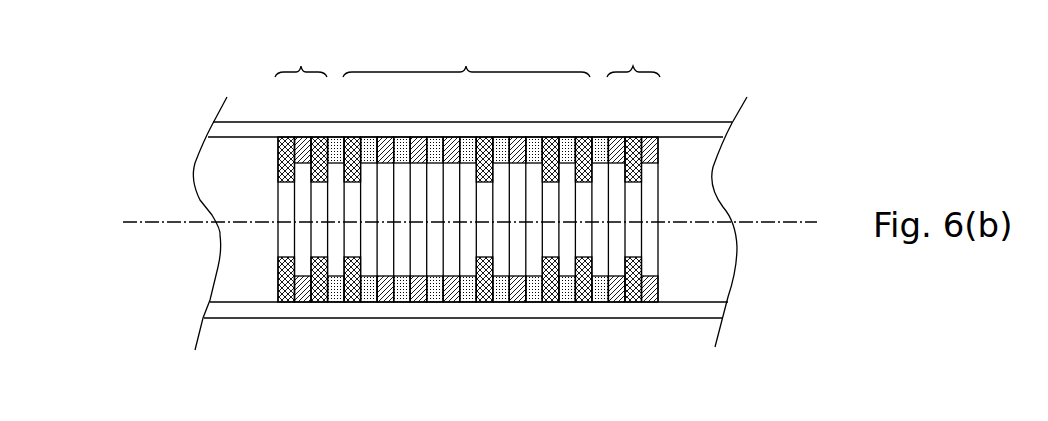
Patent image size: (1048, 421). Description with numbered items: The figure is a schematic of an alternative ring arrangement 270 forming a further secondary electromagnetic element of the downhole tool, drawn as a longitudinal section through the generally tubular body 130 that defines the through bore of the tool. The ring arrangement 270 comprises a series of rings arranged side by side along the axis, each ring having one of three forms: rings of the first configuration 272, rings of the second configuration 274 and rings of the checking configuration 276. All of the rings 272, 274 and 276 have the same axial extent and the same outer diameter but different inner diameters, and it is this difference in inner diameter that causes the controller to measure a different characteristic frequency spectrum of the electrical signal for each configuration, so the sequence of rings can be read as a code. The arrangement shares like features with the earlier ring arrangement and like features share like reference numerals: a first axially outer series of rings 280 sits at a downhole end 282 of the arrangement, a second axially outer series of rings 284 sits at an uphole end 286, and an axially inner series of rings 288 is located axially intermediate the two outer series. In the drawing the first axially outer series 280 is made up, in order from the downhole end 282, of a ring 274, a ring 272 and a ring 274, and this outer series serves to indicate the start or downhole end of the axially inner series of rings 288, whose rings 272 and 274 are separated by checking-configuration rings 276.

The tubular body 130 is at (214, 132).
The ring arrangement 270 is at (155, 300).
The ring of first configuration 272 is at (278, 303).
The ring of second configuration 274 is at (305, 284).
The ring of checking configuration 276 is at (480, 303).
The end marker 280 is at (633, 78).
The right tag region 282 is at (739, 195).
The start marker 284 is at (301, 78).
The left tag region 286 is at (160, 173).
The data code region 288 is at (467, 78).